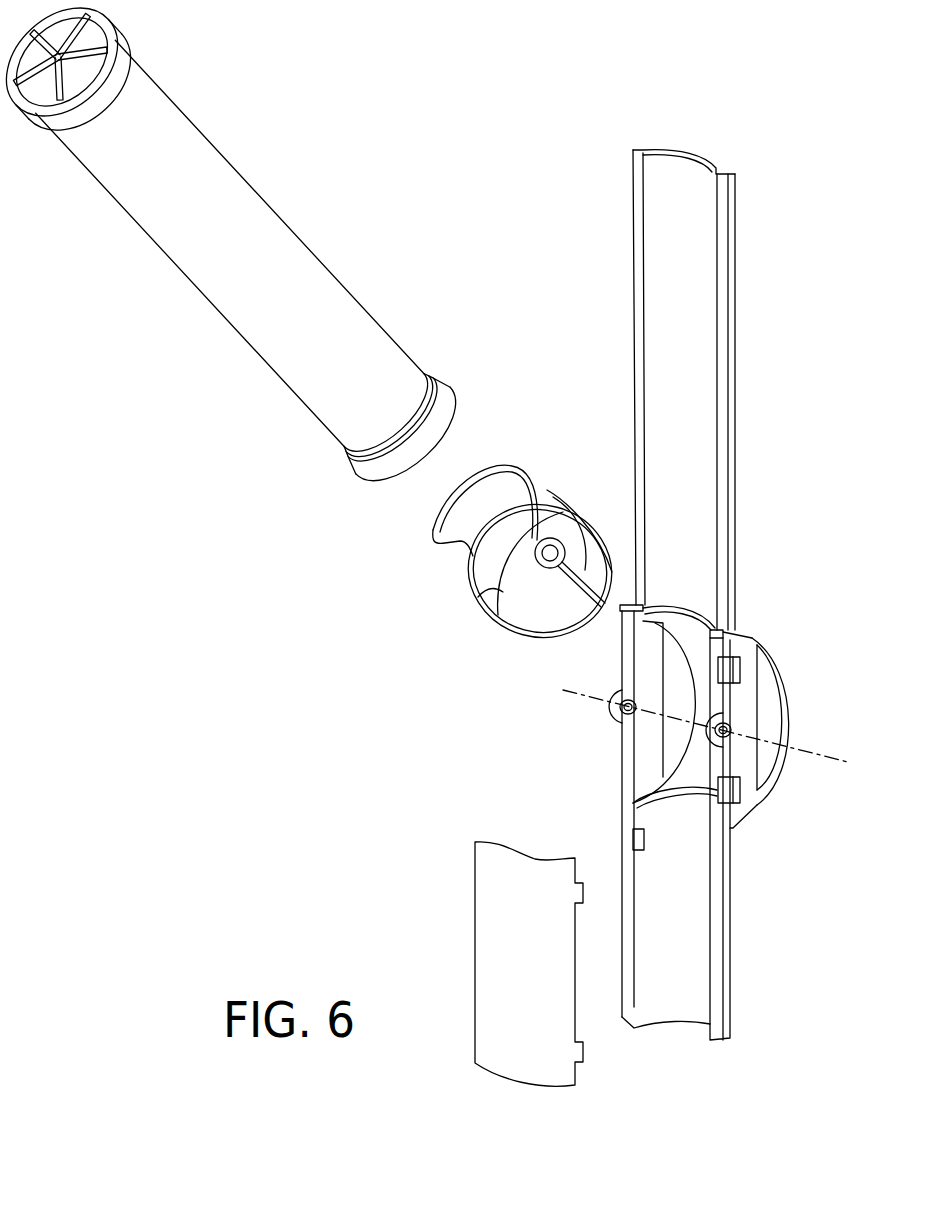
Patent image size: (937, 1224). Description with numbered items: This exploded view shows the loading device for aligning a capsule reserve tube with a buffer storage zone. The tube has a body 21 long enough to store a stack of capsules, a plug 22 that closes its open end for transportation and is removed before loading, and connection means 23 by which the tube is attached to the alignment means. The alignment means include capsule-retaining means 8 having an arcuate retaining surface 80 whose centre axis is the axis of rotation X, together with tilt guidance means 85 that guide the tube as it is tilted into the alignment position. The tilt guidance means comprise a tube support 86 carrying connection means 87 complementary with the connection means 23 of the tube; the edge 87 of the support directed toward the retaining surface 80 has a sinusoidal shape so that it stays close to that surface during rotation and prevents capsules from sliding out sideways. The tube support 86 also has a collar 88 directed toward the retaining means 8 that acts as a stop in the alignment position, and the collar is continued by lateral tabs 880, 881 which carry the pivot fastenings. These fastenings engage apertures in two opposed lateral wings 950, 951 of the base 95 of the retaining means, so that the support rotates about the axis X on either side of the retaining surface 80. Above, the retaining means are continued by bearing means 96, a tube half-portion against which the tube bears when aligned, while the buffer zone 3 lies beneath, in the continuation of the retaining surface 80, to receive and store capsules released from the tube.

The body 21 is at (318, 276).
The plug 22 is at (402, 480).
The connection means 23 is at (363, 470).
The buffer zone 3 is at (458, 946).
The capsule-retaining means 8 is at (794, 647).
The retaining surface 80 is at (778, 705).
The tilt guidance means 85 is at (447, 643).
The tube support 86 is at (500, 633).
The connection means / edge of tube support 87 is at (478, 592).
The collar 88 is at (512, 480).
The lateral tab 880 is at (440, 545).
The lateral tab 881 is at (552, 497).
The base 95 is at (591, 753).
The lateral wing 950 is at (720, 748).
The lateral wing 951 is at (608, 710).
The bearing means 96 is at (755, 309).
The axis of rotation X is at (816, 767).